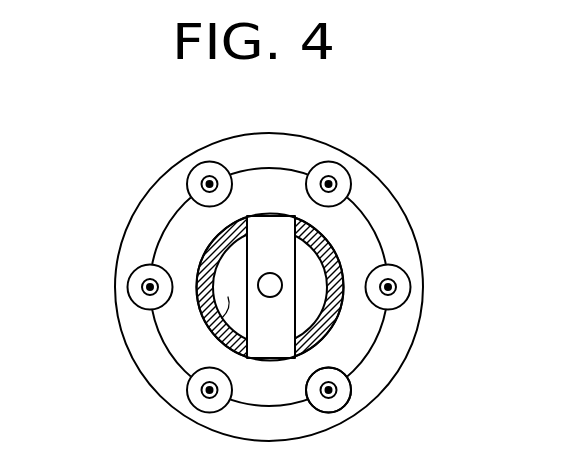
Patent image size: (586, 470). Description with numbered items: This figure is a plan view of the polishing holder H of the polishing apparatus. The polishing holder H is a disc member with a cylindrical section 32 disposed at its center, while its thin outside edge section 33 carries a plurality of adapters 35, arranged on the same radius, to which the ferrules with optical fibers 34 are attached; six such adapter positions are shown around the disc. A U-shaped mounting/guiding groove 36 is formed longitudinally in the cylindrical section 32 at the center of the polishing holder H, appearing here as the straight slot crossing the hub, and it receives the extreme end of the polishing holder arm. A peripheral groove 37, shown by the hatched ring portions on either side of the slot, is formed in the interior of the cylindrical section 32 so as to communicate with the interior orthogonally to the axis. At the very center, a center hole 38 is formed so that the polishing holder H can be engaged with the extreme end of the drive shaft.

The polishing holder H is at (370, 145).
The cylindrical section 32 is at (293, 217).
The thin outside edge section 33 is at (390, 362).
The ferrules with optical fibers 34 is at (338, 393).
The adapters 35 is at (331, 412).
The mounting/guiding groove 36 is at (283, 215).
The peripheral groove 37 is at (315, 272).
The center hole 38 is at (266, 284).